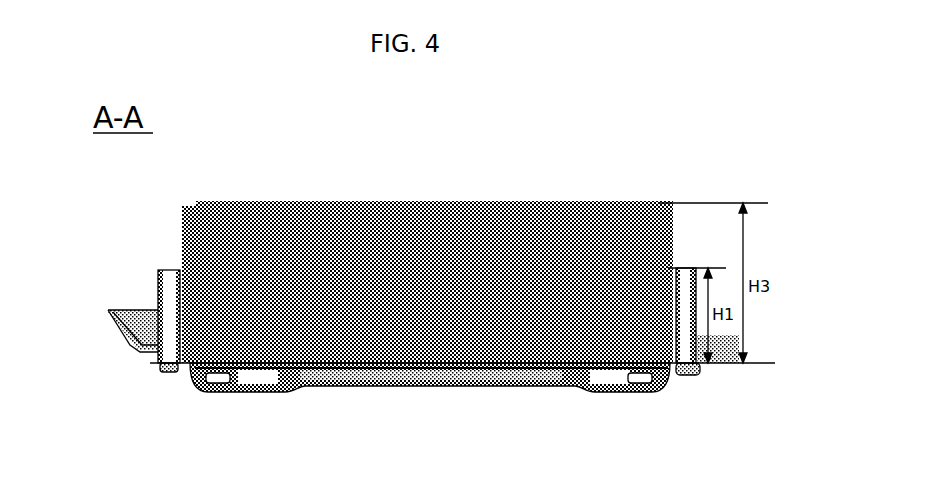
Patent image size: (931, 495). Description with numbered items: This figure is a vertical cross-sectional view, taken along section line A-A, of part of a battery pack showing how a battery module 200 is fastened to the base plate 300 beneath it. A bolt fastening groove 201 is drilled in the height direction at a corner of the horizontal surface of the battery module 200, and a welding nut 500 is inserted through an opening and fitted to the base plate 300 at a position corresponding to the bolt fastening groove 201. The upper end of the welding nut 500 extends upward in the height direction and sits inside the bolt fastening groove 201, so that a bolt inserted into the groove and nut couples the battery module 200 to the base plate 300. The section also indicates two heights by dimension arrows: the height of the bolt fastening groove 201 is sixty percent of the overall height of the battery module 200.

The battery module 200 is at (380, 208).
The bolt fastening groove 201 is at (178, 269).
The base plate 300 is at (328, 388).
The welding nut 500 is at (168, 367).